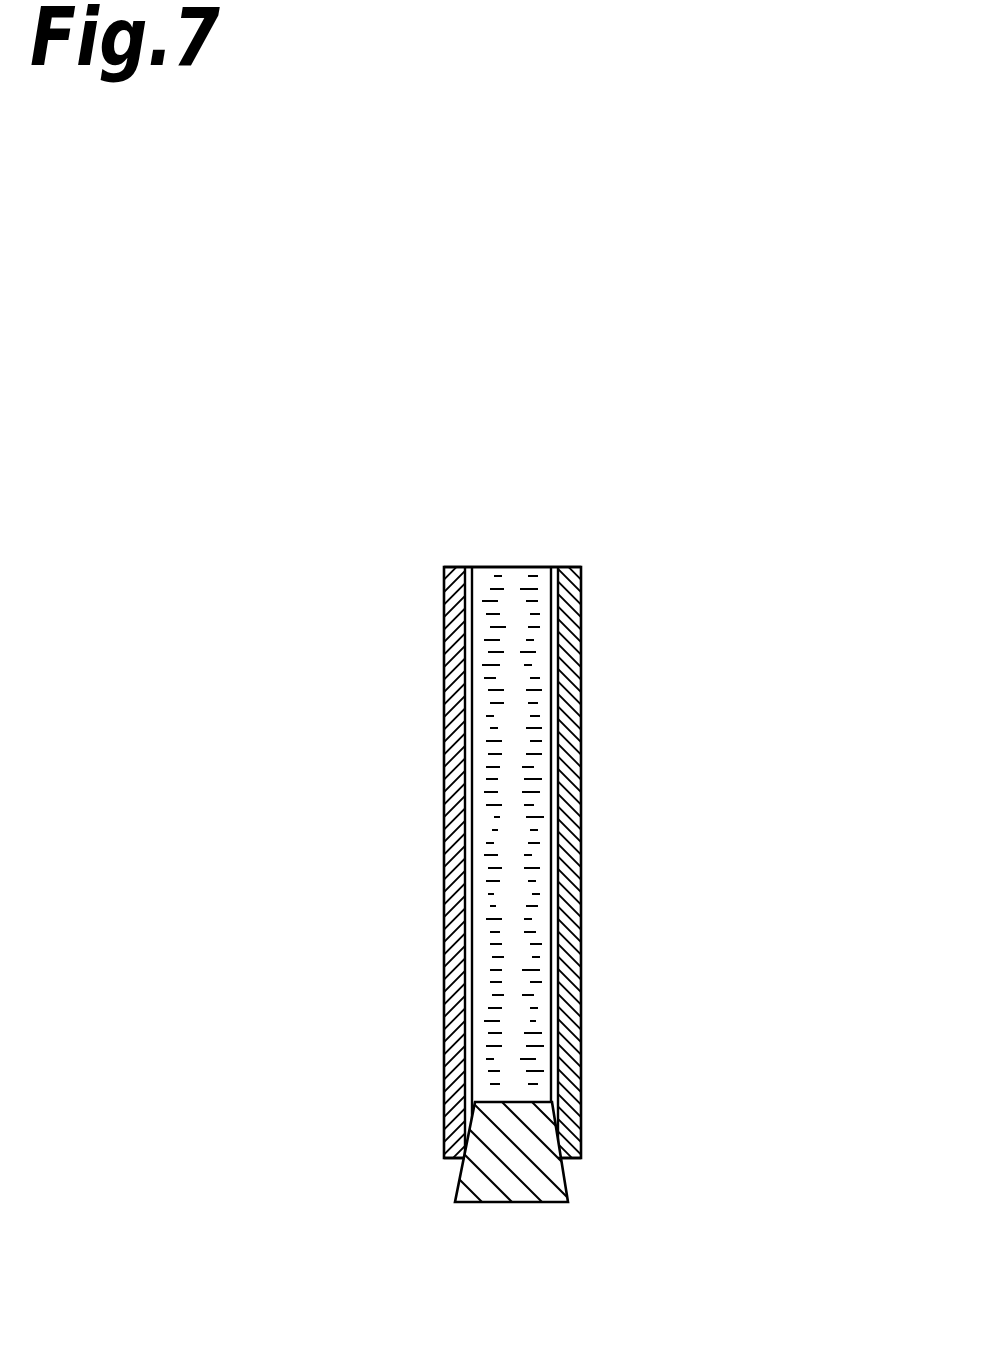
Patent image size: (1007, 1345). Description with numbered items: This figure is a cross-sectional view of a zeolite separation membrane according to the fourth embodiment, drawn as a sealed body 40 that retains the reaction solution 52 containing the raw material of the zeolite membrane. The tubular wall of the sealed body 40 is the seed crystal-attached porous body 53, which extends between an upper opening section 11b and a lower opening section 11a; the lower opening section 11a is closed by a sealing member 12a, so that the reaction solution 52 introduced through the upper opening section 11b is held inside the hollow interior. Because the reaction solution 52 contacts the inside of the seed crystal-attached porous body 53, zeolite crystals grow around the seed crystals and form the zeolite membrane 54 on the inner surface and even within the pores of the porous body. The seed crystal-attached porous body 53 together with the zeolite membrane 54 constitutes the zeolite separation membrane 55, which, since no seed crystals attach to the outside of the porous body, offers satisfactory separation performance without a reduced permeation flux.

The sealed body 40 is at (648, 746).
The opening section 11a is at (573, 1163).
The opening section 11b is at (574, 562).
The sealing member 12a is at (520, 1193).
The reaction solution 52 is at (487, 875).
The seed crystal-attached porous body 53 is at (573, 792).
The zeolite membrane 54 is at (558, 885).
The zeolite separation membrane 55 is at (703, 773).